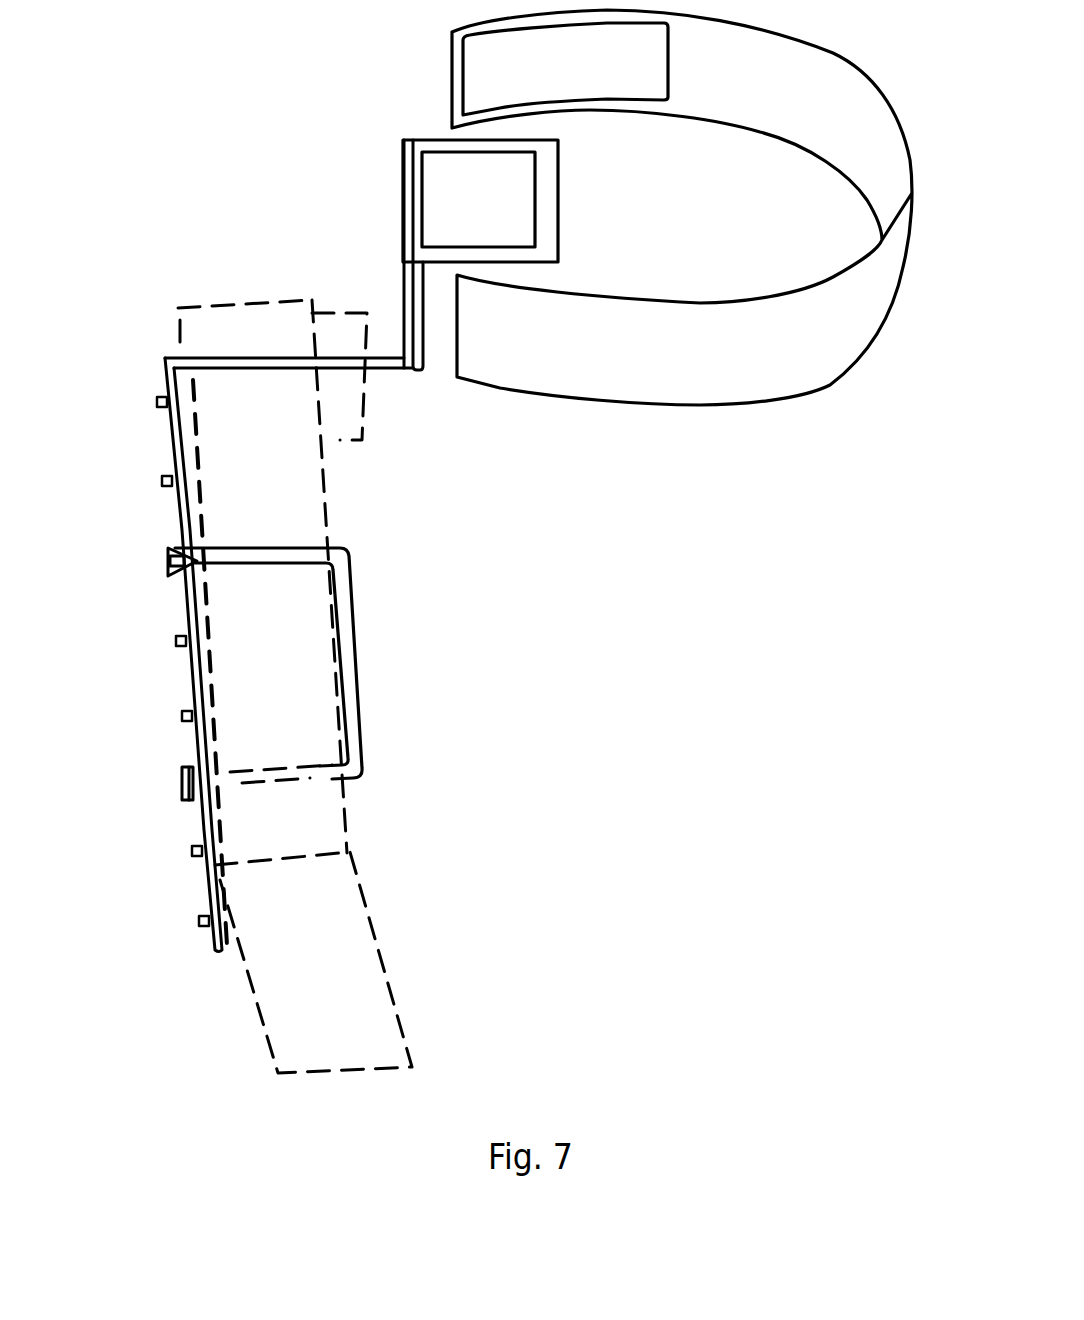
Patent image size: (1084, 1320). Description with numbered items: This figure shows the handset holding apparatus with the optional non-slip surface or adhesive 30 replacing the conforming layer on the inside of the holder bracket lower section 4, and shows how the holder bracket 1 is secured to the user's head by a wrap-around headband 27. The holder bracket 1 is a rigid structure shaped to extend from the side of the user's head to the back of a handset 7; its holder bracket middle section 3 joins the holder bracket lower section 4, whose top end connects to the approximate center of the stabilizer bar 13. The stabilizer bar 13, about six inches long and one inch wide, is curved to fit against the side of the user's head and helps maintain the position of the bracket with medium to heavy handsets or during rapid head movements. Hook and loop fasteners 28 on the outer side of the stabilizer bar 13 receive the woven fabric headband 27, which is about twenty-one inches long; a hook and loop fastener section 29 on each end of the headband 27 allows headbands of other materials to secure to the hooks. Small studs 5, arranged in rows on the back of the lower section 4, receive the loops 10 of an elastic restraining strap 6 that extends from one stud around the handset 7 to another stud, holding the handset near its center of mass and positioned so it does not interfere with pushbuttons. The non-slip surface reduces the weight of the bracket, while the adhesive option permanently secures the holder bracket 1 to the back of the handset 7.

The holder bracket 1 is at (407, 368).
The holder bracket middle section 3 is at (377, 368).
The holder bracket lower section 4 is at (175, 437).
The studs 5 is at (163, 482).
The restraining strap 6 is at (309, 663).
The handset 7 is at (302, 800).
The loops 10 is at (170, 582).
The stabilizer bar 13 is at (545, 173).
The wrap-around headband 27 is at (788, 355).
The hook and loop fasteners 28 is at (513, 220).
The hook and loop fastener section 29 is at (523, 51).
The non-slip surface or adhesive 30 is at (227, 927).